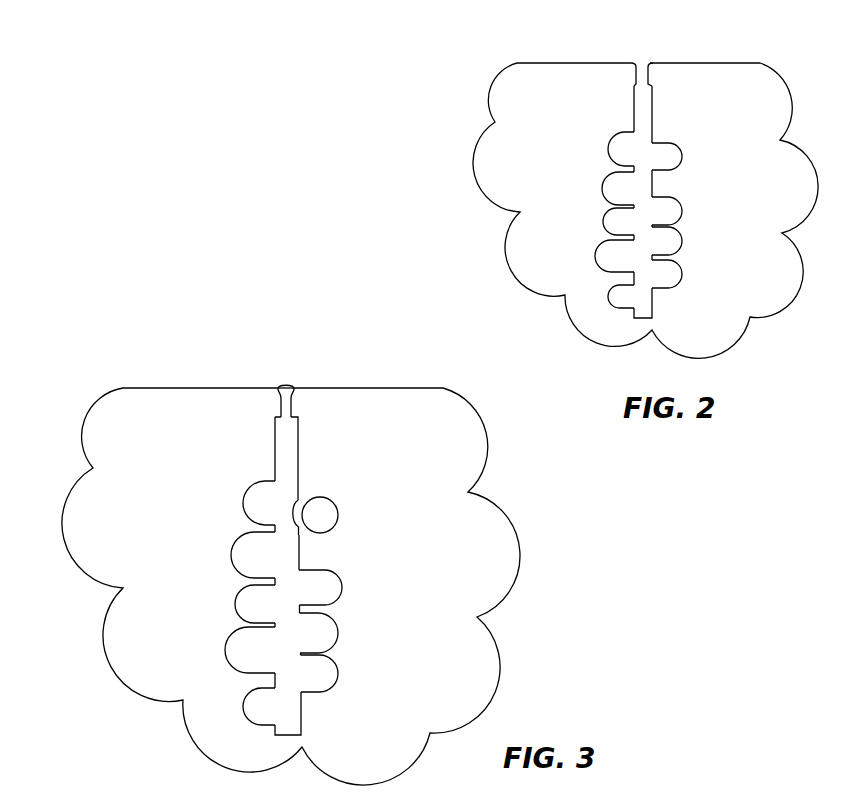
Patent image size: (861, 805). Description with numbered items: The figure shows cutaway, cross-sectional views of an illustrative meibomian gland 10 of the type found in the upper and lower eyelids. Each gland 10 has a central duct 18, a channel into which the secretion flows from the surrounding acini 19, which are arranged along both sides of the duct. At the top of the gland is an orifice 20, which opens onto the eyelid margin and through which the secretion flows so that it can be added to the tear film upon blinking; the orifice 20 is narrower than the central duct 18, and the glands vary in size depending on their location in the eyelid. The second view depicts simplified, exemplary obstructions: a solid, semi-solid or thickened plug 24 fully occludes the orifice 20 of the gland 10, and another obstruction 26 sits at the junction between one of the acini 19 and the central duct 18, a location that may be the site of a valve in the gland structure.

In FIG. 2, the meibomian gland 10 is at (552, 131).
In FIG. 3, the meibomian gland 10 is at (166, 481).
In FIG. 2, the central duct 18 is at (658, 105).
In FIG. 3, the central duct 18 is at (303, 443).
In FIG. 2, the acini 19 is at (606, 255).
In FIG. 3, the acini 19 is at (333, 509).
In FIG. 2, the orifice 20 is at (656, 66).
In FIG. 3, the orifice 20 is at (302, 397).
In FIG. 3, the plug 24 is at (274, 393).
In FIG. 3, the obstruction 26 is at (301, 512).